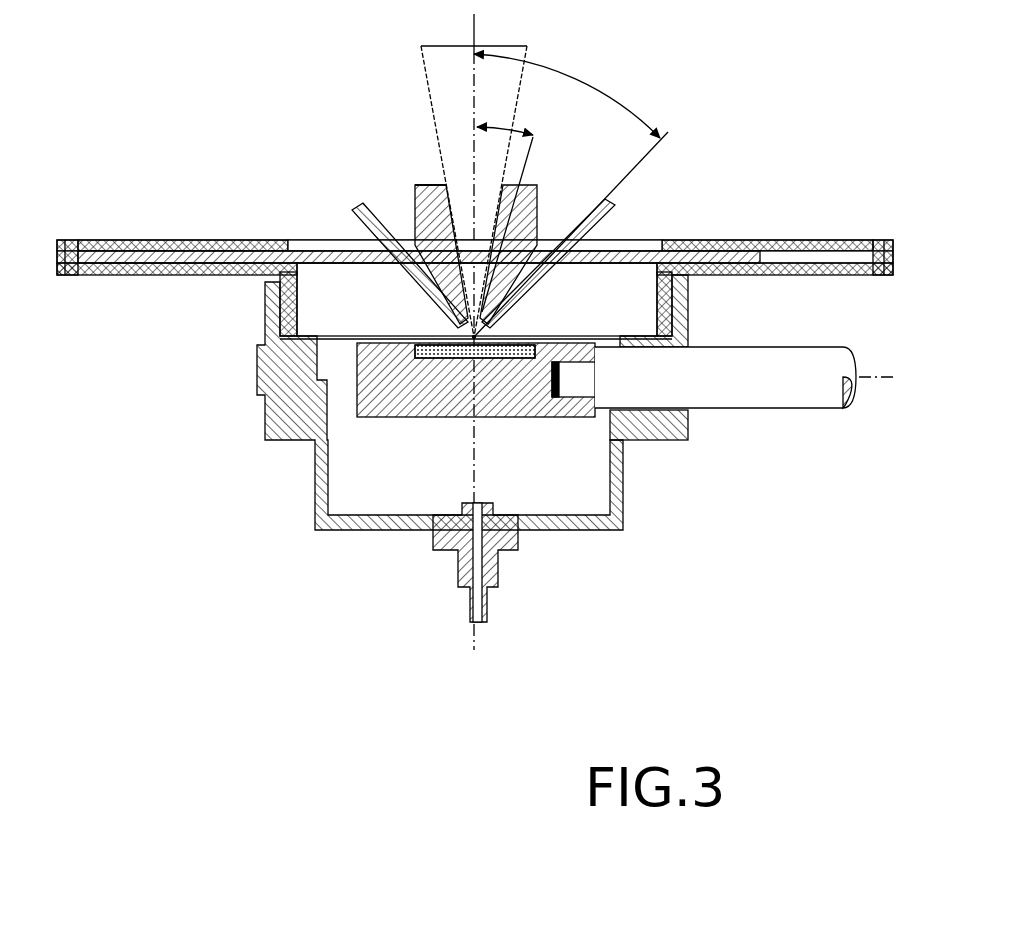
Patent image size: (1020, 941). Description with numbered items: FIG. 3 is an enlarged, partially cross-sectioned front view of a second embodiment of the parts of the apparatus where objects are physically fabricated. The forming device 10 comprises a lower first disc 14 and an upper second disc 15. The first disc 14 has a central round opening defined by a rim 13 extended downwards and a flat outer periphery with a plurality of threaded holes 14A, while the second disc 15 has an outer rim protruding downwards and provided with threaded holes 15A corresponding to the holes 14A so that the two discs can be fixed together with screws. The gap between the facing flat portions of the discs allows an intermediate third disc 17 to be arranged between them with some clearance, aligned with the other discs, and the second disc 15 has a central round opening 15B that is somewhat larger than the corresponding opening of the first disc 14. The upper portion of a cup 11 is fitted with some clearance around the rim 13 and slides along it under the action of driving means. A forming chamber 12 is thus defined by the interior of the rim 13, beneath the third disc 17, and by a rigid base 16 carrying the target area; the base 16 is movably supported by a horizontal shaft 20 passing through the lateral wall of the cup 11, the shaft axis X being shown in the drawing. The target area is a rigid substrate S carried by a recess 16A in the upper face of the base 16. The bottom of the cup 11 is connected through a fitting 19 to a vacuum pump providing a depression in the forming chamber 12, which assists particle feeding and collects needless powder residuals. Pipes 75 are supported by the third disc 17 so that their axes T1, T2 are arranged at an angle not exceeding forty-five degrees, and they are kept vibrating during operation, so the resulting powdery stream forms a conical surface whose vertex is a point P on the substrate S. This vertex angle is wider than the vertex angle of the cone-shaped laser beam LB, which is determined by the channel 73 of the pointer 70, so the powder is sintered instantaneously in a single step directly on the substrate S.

The forming device 10 is at (315, 498).
The cup 11 is at (662, 438).
The forming chamber 12 is at (366, 316).
The rim 13 is at (267, 330).
The first disc 14 is at (475, 298).
The threaded holes 14A is at (53, 287).
The second disc 15 is at (97, 303).
The threaded holes 15A is at (56, 303).
The central round opening 15B is at (303, 248).
The rigid base 16 is at (370, 395).
The recess 16A is at (507, 362).
The third disc 17 is at (626, 253).
The fitting 19 is at (490, 570).
The horizontal shaft 20 is at (770, 402).
The pointer 70 is at (537, 212).
The channel 73 is at (438, 186).
The pipes 75 is at (374, 222).
The laser beam LB is at (445, 99).
The point P is at (476, 347).
The substrate S is at (437, 360).
The axis T1 is at (627, 182).
The axis T2 is at (348, 207).
The rotation axis X is at (875, 378).